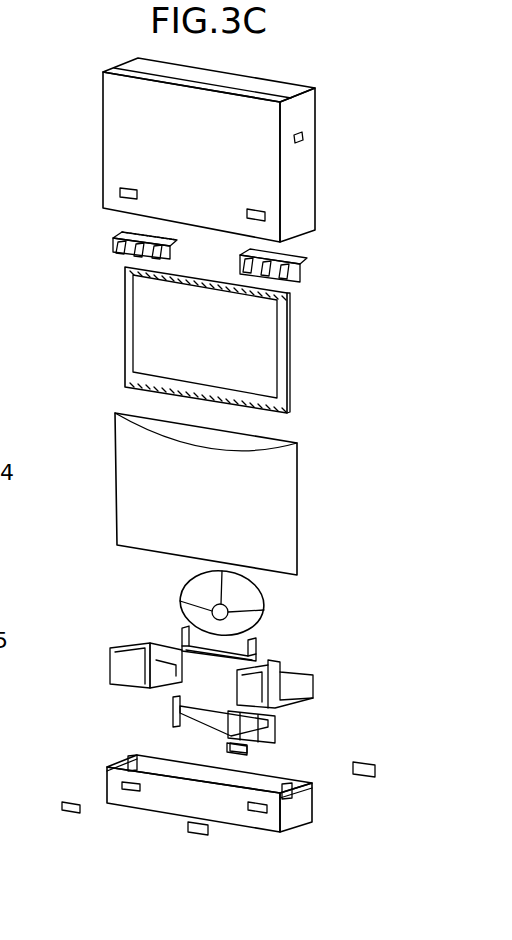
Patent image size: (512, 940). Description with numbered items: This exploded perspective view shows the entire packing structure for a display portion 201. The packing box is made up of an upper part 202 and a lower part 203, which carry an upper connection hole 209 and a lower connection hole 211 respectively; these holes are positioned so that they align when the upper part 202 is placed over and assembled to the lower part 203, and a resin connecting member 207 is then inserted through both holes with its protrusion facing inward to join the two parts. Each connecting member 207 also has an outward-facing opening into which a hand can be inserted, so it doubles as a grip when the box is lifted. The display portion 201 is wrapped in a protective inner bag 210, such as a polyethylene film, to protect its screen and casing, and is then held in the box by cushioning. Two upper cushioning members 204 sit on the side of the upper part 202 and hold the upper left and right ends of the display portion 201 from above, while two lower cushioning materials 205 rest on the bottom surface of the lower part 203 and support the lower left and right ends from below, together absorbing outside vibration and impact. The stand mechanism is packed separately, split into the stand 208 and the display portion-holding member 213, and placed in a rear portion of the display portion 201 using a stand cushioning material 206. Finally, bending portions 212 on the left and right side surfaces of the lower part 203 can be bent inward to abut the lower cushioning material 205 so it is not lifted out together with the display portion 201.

The display portion 201 is at (125, 378).
The upper part 202 is at (300, 127).
The lower part 203 is at (152, 770).
The upper cushioning member 204 is at (112, 245).
The lower cushioning material 205 is at (110, 650).
The stand cushioning material 206 is at (273, 720).
The connecting member 207 is at (370, 757).
The stand 208 is at (265, 602).
The upper connection hole 209 is at (120, 192).
The inner bag 210 is at (147, 517).
The lower connection hole 211 is at (107, 768).
The bending portion 212 is at (137, 757).
The display portion-holding member 213 is at (182, 633).